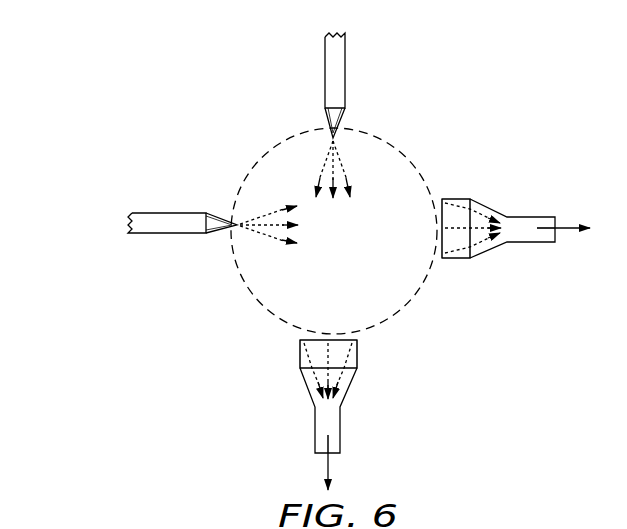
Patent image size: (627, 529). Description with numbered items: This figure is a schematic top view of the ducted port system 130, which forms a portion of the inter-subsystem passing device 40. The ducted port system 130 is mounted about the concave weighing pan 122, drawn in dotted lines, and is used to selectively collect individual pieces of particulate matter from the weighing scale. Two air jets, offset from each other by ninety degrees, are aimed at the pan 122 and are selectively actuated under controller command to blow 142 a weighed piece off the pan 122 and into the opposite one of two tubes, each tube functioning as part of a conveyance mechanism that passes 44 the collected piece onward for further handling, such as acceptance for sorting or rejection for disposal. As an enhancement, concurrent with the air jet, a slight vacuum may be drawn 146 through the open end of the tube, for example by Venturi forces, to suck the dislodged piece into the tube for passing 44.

The inter-subsystem passing device 40 is at (232, 118).
The concave weighing pan 122 is at (390, 141).
The ducted port system 130 is at (197, 305).
The blowing of the individual piece 142 is at (260, 214).
The vacuum drawn through the tube 146 is at (455, 250).
The passing of the collected pieces 44 is at (546, 232).